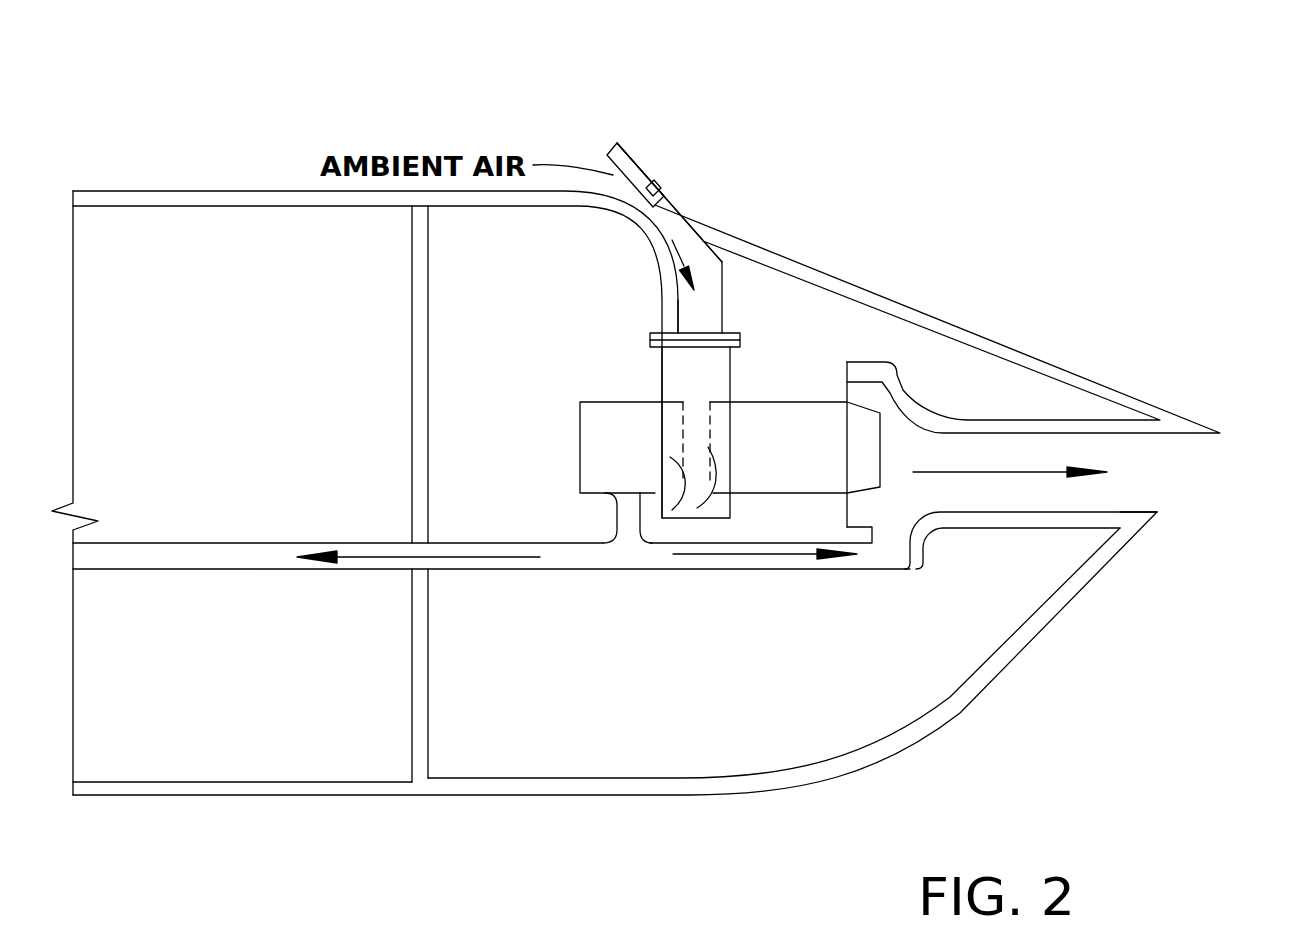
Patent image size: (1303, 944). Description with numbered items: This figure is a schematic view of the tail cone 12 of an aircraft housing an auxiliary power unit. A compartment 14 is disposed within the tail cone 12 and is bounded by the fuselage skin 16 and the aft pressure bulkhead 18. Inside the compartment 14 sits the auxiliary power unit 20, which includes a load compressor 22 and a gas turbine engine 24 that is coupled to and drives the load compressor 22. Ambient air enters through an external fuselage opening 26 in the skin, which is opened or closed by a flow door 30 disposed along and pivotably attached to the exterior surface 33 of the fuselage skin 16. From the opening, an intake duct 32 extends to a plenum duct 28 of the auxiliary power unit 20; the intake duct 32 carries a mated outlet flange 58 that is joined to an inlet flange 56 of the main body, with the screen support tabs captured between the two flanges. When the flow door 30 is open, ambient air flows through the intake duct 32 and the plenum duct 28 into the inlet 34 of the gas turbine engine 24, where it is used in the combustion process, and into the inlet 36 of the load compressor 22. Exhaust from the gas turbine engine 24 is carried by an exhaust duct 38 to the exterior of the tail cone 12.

The tail cone 12 is at (958, 105).
The compartment 14 is at (530, 238).
The fuselage skin 16 is at (917, 737).
The aft pressure bulkhead 18 is at (410, 403).
The auxiliary power unit 20 is at (600, 370).
The load compressor 22 is at (592, 465).
The gas turbine engine 24 is at (789, 442).
The external fuselage opening 26 is at (613, 168).
The plenum duct 28 is at (703, 363).
The flow door 30 is at (640, 168).
The intake duct 32 is at (695, 280).
The exterior surface 33 is at (690, 235).
The inlet of the gas turbine engine 34 is at (728, 518).
The inlet of the load compressor 36 is at (658, 492).
The exhaust duct 38 is at (1143, 493).
The inlet flange 56 is at (650, 346).
The mated outlet flange 58 is at (833, 278).